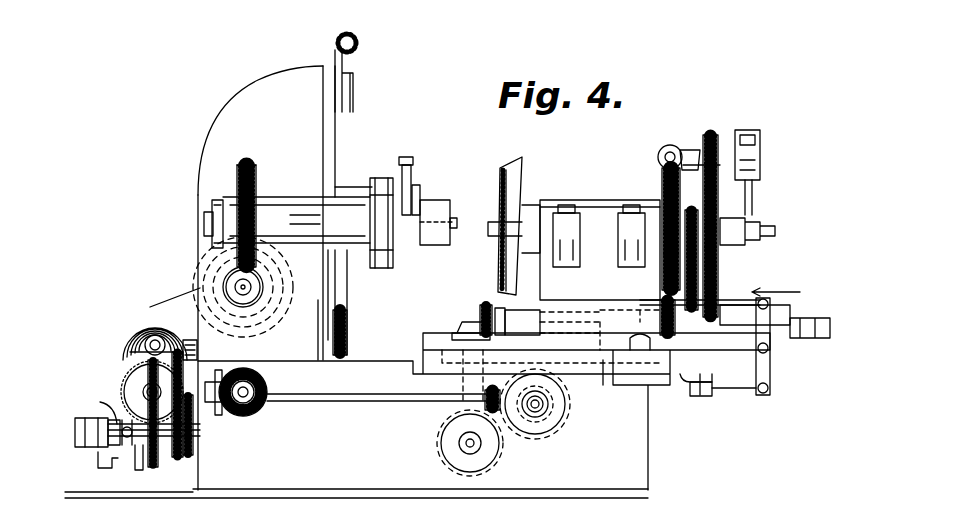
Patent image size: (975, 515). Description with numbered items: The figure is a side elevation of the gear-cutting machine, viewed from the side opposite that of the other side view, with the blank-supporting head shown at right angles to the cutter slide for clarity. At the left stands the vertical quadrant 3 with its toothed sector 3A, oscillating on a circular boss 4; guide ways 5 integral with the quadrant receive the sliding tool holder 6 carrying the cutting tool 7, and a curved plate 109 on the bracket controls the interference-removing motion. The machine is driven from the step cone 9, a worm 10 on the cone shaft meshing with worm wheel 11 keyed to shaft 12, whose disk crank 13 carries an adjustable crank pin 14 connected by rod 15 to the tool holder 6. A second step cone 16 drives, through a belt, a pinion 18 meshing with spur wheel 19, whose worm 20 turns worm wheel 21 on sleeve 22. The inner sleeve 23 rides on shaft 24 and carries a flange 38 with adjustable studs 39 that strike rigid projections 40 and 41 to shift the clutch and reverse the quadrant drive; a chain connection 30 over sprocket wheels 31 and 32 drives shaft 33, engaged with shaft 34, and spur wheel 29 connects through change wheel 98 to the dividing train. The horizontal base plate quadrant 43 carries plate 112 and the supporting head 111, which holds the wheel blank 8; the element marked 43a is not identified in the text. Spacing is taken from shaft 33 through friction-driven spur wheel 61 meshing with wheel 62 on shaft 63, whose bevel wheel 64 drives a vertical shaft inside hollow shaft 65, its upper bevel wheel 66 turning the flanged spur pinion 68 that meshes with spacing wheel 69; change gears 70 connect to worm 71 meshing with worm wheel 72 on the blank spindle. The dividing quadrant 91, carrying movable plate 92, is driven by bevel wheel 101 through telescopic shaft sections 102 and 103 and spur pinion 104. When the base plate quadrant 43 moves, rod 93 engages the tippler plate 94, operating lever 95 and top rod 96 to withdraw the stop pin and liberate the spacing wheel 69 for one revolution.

The vertical quadrant 3 is at (347, 280).
The toothed sector 3A is at (347, 333).
The circular boss 4 is at (394, 351).
The guide ways 5 is at (352, 192).
The sliding tool holder 6 is at (432, 207).
The cutting tool 7 is at (452, 230).
The wheel blank 8 is at (507, 218).
The step cone 9 is at (198, 293).
The worm 10 is at (252, 283).
The worm wheel 11 is at (258, 183).
The shaft 12 is at (204, 226).
The disk crank 13 is at (382, 268).
The adjustable crank pin 14 is at (420, 190).
The rod 15 is at (411, 172).
The step cone 16 is at (206, 278).
The pinion 18 is at (148, 343).
The spur wheel 19 is at (135, 372).
The worm 20 is at (145, 390).
The worm wheel 21 is at (155, 467).
The sleeve 22 is at (177, 458).
The inner sleeve 23 is at (112, 420).
The shaft 24 is at (76, 425).
The spur wheel 29 is at (183, 350).
The chain connection 30 is at (197, 351).
The sprocket wheel 31 is at (212, 207).
The sprocket wheel 32 is at (222, 408).
The shaft 33 is at (377, 390).
The shaft 34 is at (138, 468).
The flange 38 is at (108, 438).
The adjustable stud 39 is at (100, 402).
The rigid projection 40 is at (98, 462).
The rigid projection 41 is at (123, 446).
The base plate quadrant 43 is at (603, 385).
The plate 43a is at (447, 352).
The spur wheel 61 is at (566, 418).
The wheel 62 is at (497, 460).
The shaft 63 is at (466, 443).
The small bevel wheel 64 is at (724, 368).
The hollow shaft 65 is at (462, 381).
The small bevel wheel 66 is at (480, 320).
The flanged spur pinion 68 is at (745, 319).
The spacing wheel 69 is at (718, 185).
The change gears 70 is at (745, 123).
The worm 71 is at (658, 155).
The worm wheel 72 is at (660, 183).
The dividing quadrant 91 is at (700, 142).
The movable plate 92 is at (650, 183).
The rod 93 is at (712, 394).
The movable tippler plate 94 is at (718, 283).
The lever 95 is at (770, 370).
The top rod 96 is at (720, 294).
The change wheel 98 is at (193, 450).
The bevel wheel 101 is at (456, 332).
The telescopic shaft section 102 is at (552, 314).
The telescopic shaft section 103 is at (624, 326).
The spur pinion 104 is at (654, 344).
The curved plate 109 is at (359, 88).
The supporting head 111 is at (599, 236).
The plate 112 is at (738, 330).